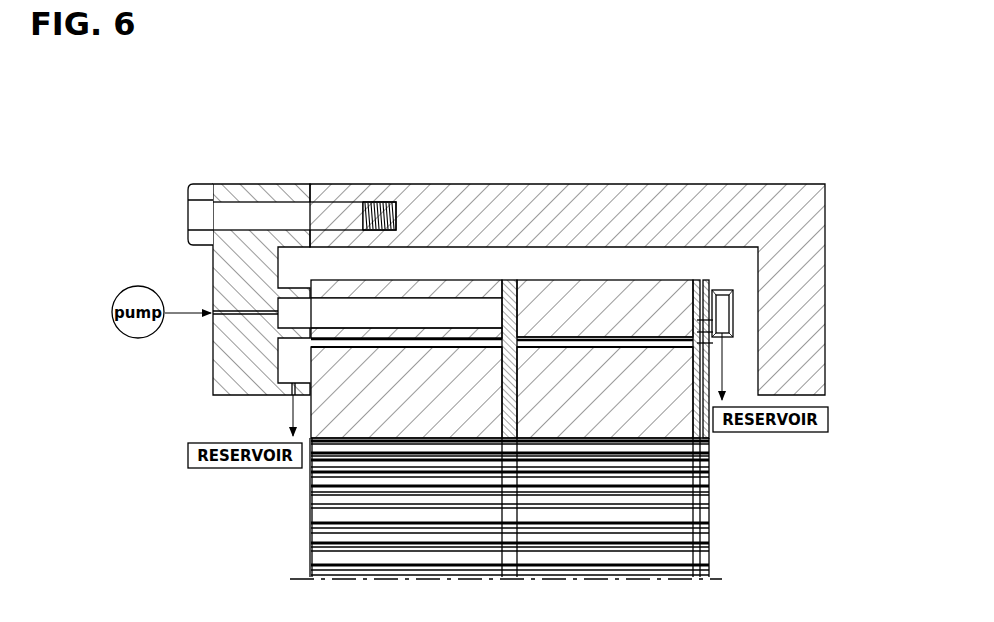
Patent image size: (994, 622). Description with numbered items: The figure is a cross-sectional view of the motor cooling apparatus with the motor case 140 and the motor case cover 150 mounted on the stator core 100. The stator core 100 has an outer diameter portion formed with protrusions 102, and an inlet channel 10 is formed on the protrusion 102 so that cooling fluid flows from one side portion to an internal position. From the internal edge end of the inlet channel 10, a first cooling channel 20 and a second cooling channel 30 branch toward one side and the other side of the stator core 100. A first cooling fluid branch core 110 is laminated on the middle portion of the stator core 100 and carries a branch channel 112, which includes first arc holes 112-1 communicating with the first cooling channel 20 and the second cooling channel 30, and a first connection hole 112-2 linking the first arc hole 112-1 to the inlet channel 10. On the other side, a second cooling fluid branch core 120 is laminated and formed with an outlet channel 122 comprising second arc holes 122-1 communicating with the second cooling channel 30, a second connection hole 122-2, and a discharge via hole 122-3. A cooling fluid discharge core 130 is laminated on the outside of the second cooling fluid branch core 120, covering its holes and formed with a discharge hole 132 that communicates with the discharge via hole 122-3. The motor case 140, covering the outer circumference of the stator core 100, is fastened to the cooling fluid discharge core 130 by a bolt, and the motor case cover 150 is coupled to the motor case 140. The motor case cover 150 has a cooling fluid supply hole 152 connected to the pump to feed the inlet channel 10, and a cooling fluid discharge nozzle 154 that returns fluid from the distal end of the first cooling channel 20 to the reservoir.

The inlet channel 10 is at (322, 308).
The first cooling channel 20 is at (343, 342).
The second cooling channel 30 is at (653, 343).
The stator core 100 is at (478, 250).
The protrusion 102 is at (362, 292).
The first cooling fluid branch core 110 is at (513, 271).
The branch channel 112 is at (595, 203).
The first arc hole 112-1 is at (520, 343).
The first connection hole 112-2 is at (517, 339).
The second cooling fluid branch core 120 is at (699, 271).
The outlet channel 122 is at (824, 360).
The second arc hole 122-1 is at (698, 320).
The second connection hole 122-2 is at (698, 332).
The discharge via hole 122-3 is at (698, 343).
The cooling fluid discharge core 130 is at (712, 436).
The discharge hole 132 is at (708, 315).
The motor case 140 is at (616, 182).
The motor case cover 150 is at (202, 371).
The cooling fluid supply hole 152 is at (233, 311).
The cooling fluid discharge nozzle 154 is at (280, 387).